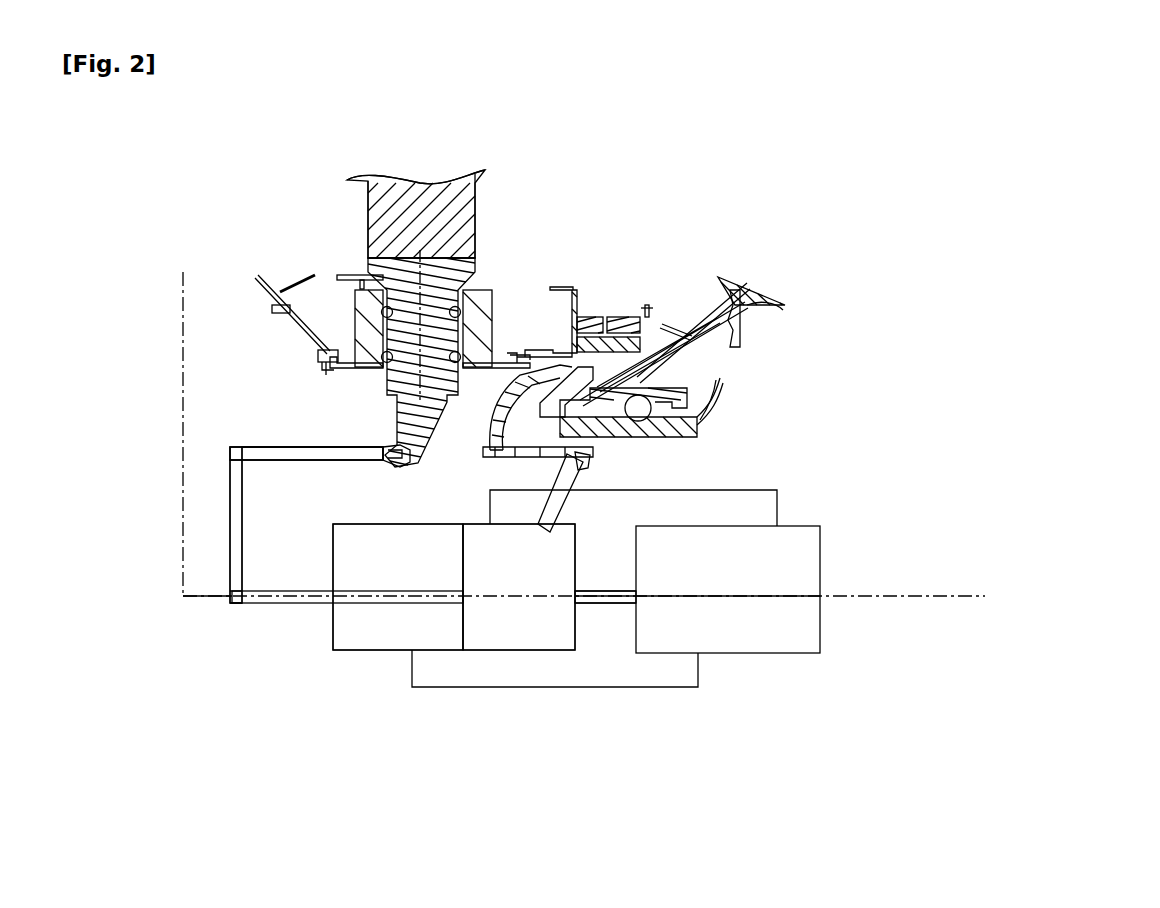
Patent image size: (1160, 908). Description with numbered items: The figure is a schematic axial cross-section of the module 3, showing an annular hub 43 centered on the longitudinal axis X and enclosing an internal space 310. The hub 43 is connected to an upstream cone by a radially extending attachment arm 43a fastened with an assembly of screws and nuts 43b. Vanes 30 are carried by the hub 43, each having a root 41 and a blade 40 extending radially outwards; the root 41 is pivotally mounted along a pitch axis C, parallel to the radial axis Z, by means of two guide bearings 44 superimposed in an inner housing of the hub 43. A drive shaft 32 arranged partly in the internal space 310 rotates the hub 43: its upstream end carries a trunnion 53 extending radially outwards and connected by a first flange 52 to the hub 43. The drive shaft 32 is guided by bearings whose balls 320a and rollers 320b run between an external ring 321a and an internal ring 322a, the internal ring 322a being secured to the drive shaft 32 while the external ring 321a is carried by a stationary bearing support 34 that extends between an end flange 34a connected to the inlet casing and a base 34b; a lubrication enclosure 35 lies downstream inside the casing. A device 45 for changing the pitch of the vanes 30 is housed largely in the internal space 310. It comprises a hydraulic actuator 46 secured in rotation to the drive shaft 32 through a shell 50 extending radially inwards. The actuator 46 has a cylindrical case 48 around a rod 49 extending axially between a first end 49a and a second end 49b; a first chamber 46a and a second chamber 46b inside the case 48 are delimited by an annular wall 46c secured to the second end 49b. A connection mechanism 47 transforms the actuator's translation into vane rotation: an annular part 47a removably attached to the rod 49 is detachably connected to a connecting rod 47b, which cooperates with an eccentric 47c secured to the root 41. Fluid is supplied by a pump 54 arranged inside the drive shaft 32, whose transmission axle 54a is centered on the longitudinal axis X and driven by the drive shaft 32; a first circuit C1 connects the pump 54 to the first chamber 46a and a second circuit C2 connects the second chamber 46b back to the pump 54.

The module 3 is at (256, 152).
The vane 30 is at (496, 171).
The blade 40 is at (380, 217).
The root 41 is at (403, 283).
The pitch axis C is at (423, 250).
The hub 43 is at (355, 312).
The attachment arm 43a is at (285, 315).
The assembly of screws and nuts 43b is at (275, 307).
The guide bearing 44 is at (468, 312).
The first flange 52 is at (517, 357).
The trunnion 53 is at (490, 418).
The balls 320a is at (620, 400).
The rollers 320b is at (600, 403).
The external ring 321a is at (603, 420).
The drive shaft 32 is at (560, 460).
The bearing support 34 is at (720, 320).
The end flange 34a is at (737, 292).
The base 34b is at (633, 400).
The lubrication enclosure 35 is at (728, 373).
The internal ring 322a is at (705, 420).
The shell 50 is at (585, 478).
The connection mechanism 47 is at (208, 453).
The annular part 47a is at (230, 520).
The connecting rod 47b is at (297, 453).
The eccentric 47c is at (402, 427).
The internal space 310 is at (292, 391).
The rod 49 is at (322, 590).
The first end 49a is at (462, 592).
The second end 49b is at (228, 603).
The hydraulic actuator 46 is at (324, 665).
The first chamber 46a is at (410, 625).
The second chamber 46b is at (530, 626).
The annular wall 46c is at (462, 625).
The case 48 is at (356, 653).
The pump 54 is at (758, 620).
The transmission axle 54a is at (600, 608).
The first circuit C1 is at (645, 690).
The second circuit C2 is at (752, 490).
The device for changing the pitch 45 is at (258, 675).
The radial axis Z is at (180, 305).
The longitudinal axis X is at (248, 602).